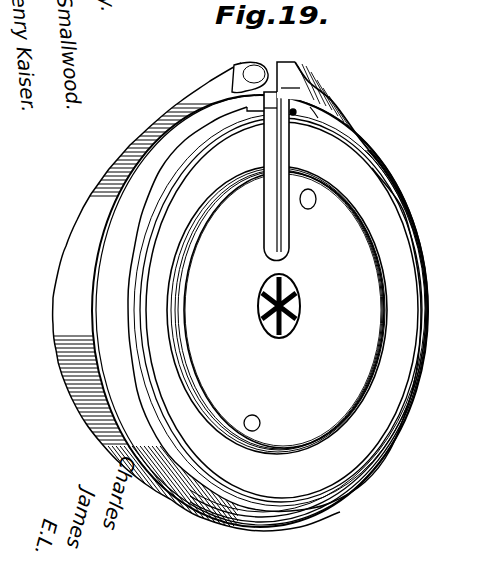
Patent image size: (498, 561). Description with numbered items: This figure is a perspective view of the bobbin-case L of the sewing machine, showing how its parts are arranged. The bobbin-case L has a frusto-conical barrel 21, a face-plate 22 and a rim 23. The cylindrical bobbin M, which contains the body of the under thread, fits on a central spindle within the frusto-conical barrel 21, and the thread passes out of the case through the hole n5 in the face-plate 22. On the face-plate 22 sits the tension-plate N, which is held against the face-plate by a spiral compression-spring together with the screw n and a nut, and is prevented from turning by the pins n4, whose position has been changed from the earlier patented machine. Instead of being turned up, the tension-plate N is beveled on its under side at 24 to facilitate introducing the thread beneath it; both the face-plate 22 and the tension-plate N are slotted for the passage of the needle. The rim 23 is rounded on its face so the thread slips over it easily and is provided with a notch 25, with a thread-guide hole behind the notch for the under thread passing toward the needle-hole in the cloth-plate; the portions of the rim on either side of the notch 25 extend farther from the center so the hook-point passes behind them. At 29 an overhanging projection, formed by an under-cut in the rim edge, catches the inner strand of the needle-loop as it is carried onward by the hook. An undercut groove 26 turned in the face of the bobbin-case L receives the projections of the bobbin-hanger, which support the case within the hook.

The bobbin-case L is at (231, 311).
The frusto-conical barrel 21 is at (190, 297).
The face-plate 22 is at (277, 301).
The rim 23 is at (274, 309).
The beveled under side of tension-plate 24 is at (378, 270).
The notch 25 is at (270, 67).
The undercut groove 26 is at (316, 110).
The overhanging projection 29 is at (208, 93).
The cylindrical bobbin M is at (264, 127).
The tension-plate N is at (284, 310).
The screw n is at (292, 293).
The pins n4 is at (268, 418).
The hole in face-plate n5 is at (294, 115).